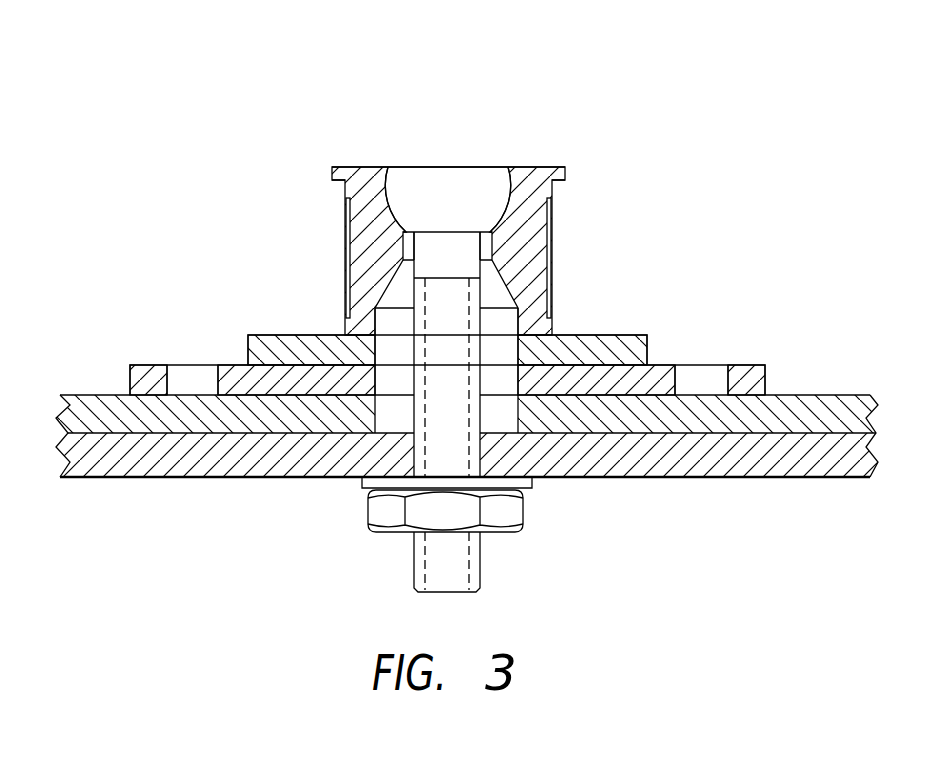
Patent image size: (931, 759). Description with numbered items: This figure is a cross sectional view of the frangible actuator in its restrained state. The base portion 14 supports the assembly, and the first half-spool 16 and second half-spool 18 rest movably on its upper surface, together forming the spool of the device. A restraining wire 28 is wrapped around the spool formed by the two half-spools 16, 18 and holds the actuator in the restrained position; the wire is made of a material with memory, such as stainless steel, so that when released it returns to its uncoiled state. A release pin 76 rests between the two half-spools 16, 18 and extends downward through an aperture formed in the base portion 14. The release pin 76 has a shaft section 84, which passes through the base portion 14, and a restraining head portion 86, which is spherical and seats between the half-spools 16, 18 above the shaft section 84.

The base portion 14 is at (652, 336).
The first half-spool 16 is at (557, 167).
The second half-spool 18 is at (342, 165).
The restraining wire 28 is at (343, 272).
The release pin 76 is at (488, 167).
The shaft section 84 is at (467, 411).
The restraining head portion 86 is at (467, 211).